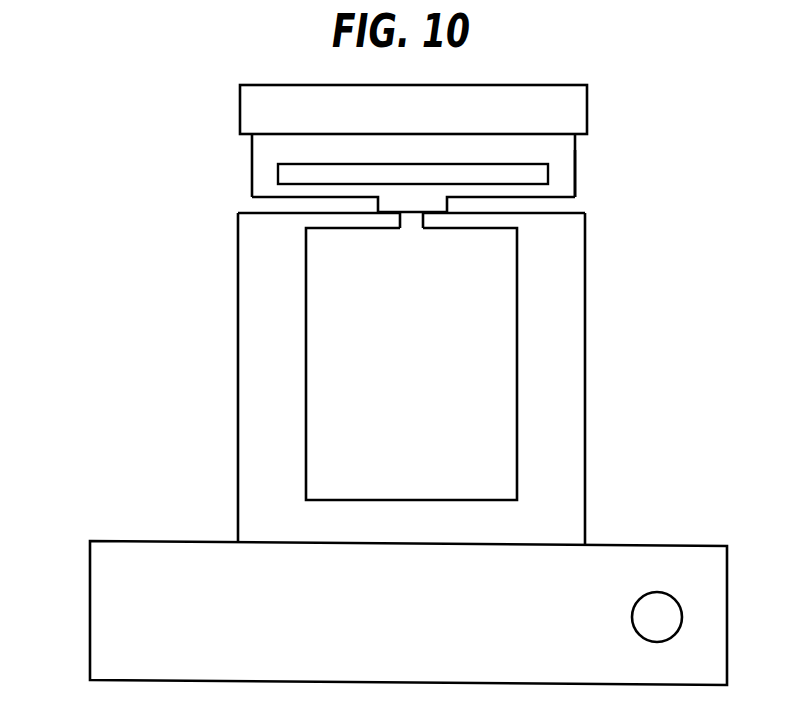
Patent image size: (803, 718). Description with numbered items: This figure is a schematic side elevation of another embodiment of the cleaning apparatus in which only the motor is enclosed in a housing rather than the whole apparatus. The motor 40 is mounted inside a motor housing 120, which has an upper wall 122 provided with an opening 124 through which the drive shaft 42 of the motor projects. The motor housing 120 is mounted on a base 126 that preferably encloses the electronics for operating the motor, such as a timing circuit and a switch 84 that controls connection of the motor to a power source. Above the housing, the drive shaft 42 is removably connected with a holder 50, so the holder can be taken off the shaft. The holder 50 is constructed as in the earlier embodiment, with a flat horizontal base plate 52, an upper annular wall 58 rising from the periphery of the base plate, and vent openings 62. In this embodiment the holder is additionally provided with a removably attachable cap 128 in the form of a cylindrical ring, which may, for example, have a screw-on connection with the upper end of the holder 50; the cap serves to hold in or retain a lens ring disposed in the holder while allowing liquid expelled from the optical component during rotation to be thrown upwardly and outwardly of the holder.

The cap 128 is at (257, 108).
The holder 50 is at (565, 148).
The annular sidewall 58 is at (578, 176).
The base plate 52 is at (260, 205).
The vent openings 62 is at (277, 177).
The upper wall 122 is at (572, 210).
The motor housing 120 is at (585, 333).
The opening 124 is at (400, 222).
The drive shaft 42 is at (306, 318).
The motor 40 is at (425, 366).
The base 126 is at (90, 631).
The switch 84 is at (637, 630).